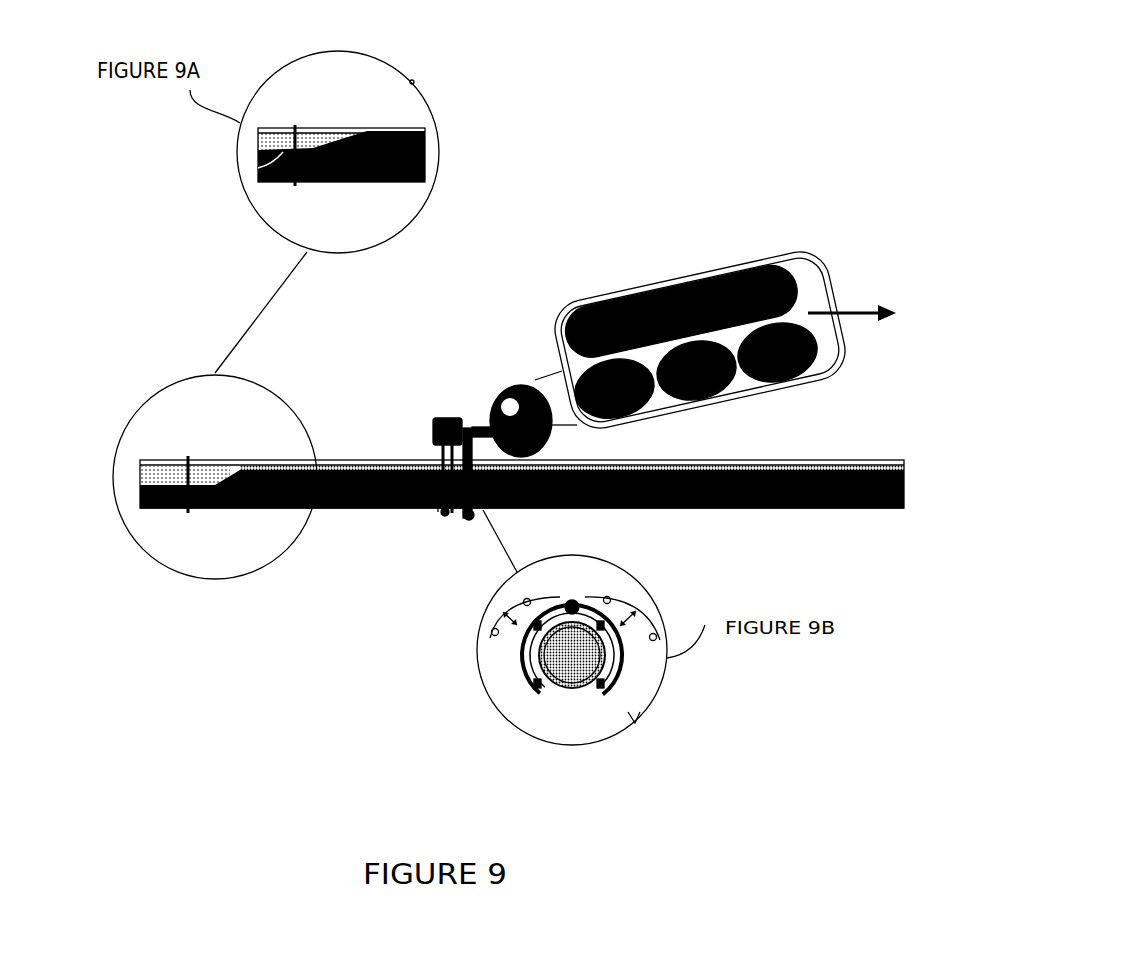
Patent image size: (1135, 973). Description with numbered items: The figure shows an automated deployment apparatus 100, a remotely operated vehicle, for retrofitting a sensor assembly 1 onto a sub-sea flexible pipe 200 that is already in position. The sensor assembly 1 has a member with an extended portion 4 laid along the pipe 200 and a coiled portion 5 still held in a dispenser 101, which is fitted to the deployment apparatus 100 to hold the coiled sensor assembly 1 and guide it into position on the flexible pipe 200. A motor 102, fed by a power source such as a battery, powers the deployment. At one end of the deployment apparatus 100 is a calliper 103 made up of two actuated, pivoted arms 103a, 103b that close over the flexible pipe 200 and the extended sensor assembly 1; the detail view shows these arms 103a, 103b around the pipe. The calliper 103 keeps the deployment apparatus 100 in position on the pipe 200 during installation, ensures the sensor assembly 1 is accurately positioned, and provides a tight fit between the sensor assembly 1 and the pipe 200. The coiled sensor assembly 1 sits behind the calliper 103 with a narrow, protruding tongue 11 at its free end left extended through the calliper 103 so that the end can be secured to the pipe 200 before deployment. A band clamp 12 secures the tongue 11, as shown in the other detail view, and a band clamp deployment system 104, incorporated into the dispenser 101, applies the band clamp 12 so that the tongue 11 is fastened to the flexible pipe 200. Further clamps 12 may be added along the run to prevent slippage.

In FIG. 9, the sensor assembly 1 is at (347, 472).
In FIG. 9, the extended portion 4 is at (383, 472).
In FIG. 9, the coiled portion 5 is at (495, 402).
In FIG. 9A, the tongue 11 is at (260, 168).
In FIG. 9, the band clamp 12 is at (190, 512).
In FIG. 9, the deployment apparatus 100 is at (643, 257).
In FIG. 9, the dispenser 101 is at (513, 385).
In FIG. 9, the motor 102 is at (537, 377).
In FIG. 9, the calliper 103 is at (462, 535).
In FIG. 9B, the pivoted arm 103a is at (519, 689).
In FIG. 9B, the pivoted arm 103b is at (605, 707).
In FIG. 9, the band clamp deployment system 104 is at (438, 510).
In FIG. 9, the flexible pipe 200 is at (810, 508).